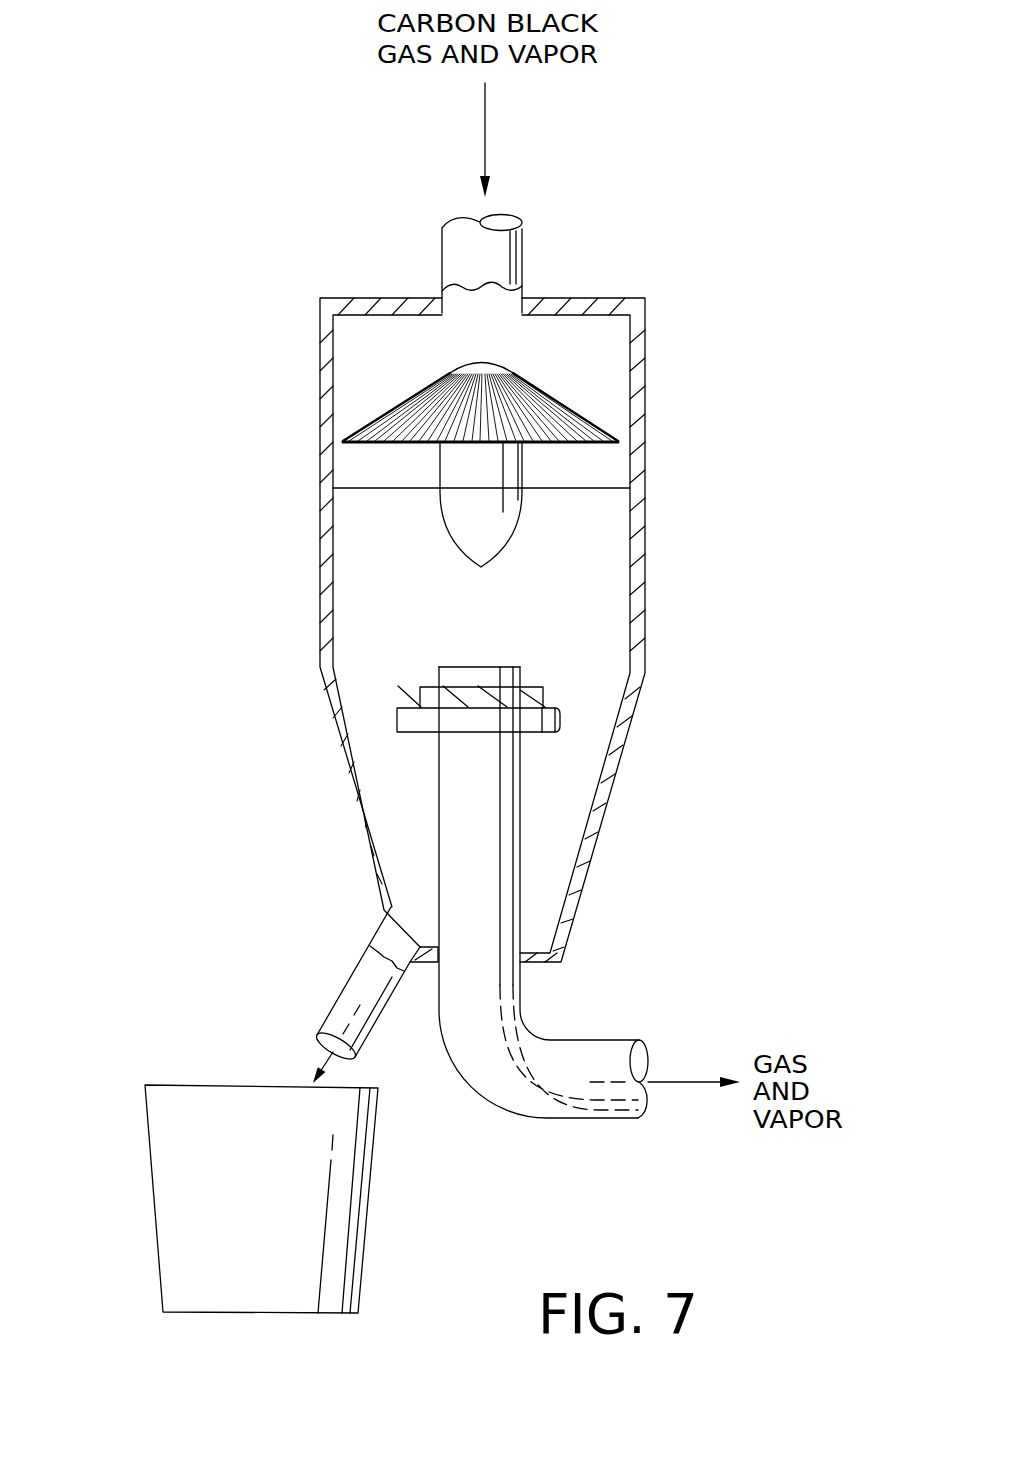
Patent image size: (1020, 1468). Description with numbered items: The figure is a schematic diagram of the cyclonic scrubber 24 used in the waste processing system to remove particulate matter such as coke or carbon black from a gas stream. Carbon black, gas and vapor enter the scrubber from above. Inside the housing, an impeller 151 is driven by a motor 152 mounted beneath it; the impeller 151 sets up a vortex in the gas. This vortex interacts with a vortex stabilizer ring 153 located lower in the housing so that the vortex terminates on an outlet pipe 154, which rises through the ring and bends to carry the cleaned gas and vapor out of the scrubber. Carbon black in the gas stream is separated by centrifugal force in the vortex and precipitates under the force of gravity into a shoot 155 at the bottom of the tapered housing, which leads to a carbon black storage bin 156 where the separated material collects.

The cyclonic scrubber 24 is at (290, 364).
The impeller 151 is at (560, 400).
The motor 152 is at (507, 466).
The vortex stabilizer ring 153 is at (543, 693).
The outlet pipe 154 is at (487, 832).
The shoot 155 is at (353, 985).
The carbon black storage bin 156 is at (183, 1115).